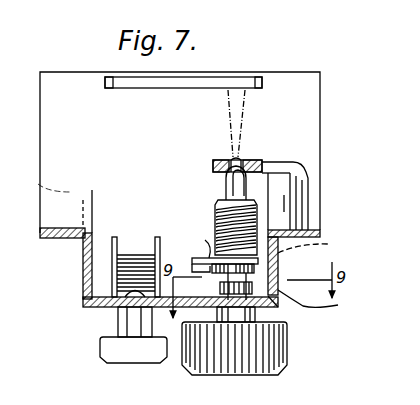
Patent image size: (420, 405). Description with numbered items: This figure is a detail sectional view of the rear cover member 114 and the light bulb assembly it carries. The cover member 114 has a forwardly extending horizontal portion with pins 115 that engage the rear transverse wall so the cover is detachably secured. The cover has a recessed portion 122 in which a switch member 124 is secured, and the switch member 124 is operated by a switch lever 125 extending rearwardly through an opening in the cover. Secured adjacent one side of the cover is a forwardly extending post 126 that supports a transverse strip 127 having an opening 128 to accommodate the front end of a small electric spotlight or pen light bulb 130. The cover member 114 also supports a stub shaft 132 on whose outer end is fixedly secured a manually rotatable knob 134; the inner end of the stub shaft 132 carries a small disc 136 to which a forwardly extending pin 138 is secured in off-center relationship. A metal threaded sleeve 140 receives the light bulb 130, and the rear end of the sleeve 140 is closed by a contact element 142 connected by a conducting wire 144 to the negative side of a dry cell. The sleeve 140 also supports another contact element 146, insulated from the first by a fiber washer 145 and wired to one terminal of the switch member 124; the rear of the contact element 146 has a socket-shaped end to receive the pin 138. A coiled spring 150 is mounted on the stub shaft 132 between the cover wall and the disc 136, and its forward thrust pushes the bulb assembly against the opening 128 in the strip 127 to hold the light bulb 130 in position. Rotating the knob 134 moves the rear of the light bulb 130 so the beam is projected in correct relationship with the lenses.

The rear cover member 114 is at (368, 149).
The pins 115 is at (125, 82).
The recessed portion 122 is at (88, 280).
The switch member 124 is at (136, 260).
The switch lever 125 is at (121, 331).
The post 126 is at (292, 197).
The transverse strip 127 is at (263, 161).
The opening 128 is at (233, 157).
The light bulb 130 is at (225, 182).
The stub shaft 132 is at (257, 317).
The knob 134 is at (276, 352).
The disc 136 is at (323, 302).
The pin 138 is at (318, 247).
The threaded sleeve 140 is at (215, 216).
The contact element 142 is at (206, 240).
The conducting wire 144 is at (196, 258).
The fiber washer 145 is at (256, 268).
The contact element 146 is at (220, 288).
The coiled spring 150 is at (286, 305).